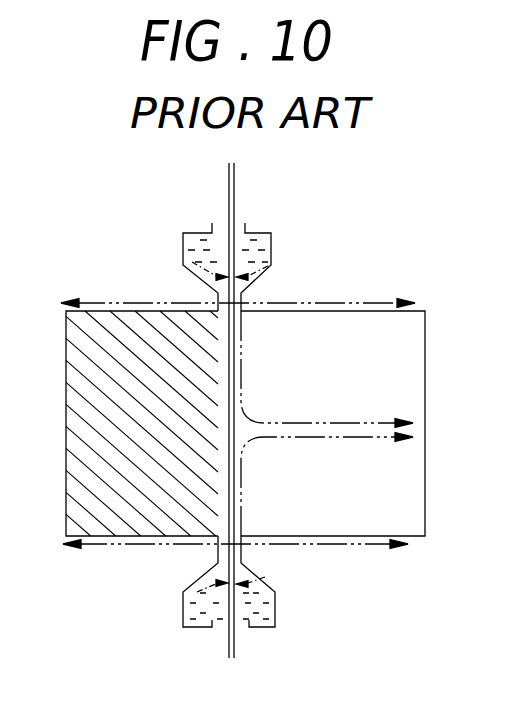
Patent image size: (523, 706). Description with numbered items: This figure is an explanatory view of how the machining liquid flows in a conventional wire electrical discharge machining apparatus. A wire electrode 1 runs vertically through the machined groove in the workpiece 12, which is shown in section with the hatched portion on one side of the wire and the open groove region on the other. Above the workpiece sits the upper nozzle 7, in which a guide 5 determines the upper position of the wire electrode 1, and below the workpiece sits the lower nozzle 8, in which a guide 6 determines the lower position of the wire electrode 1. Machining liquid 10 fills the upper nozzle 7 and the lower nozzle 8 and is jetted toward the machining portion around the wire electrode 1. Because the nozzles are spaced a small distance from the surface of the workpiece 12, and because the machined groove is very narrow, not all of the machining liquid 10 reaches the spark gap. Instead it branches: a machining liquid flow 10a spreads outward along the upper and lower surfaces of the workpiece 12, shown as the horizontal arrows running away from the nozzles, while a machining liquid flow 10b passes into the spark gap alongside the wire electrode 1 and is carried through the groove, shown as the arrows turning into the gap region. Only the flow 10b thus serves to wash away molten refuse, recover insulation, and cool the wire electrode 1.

The wire electrode 1 is at (234, 190).
The guide 5 is at (248, 277).
The guide 6 is at (248, 583).
The upper nozzle 7 is at (272, 240).
The lower nozzle 8 is at (276, 612).
The machining liquid 10 is at (183, 250).
The machining liquid flow 10a is at (338, 301).
The machining liquid flow 10b is at (380, 421).
The workpiece 12 is at (425, 345).